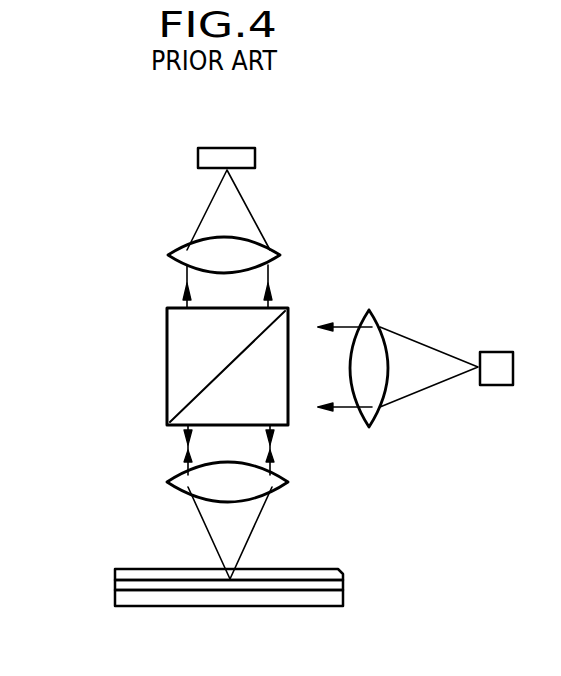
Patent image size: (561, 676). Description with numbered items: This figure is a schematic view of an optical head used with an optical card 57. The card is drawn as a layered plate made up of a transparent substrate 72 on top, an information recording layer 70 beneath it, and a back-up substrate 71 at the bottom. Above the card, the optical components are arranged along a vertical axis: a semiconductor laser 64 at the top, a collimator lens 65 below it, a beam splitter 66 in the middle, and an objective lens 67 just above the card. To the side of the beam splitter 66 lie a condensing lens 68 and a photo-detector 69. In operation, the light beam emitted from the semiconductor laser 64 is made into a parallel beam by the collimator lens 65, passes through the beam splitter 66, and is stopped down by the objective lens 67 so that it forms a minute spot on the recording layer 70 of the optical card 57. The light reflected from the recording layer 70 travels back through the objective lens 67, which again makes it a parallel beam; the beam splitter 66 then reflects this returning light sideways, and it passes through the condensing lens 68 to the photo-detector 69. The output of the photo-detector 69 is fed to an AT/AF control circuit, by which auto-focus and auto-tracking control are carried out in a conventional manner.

The optical card 57 is at (147, 563).
The semiconductor laser 64 is at (256, 158).
The collimator lens 65 is at (281, 255).
The beam splitter 66 is at (289, 309).
The objective lens 67 is at (289, 481).
The condensing lens 68 is at (378, 320).
The photo-detector 69 is at (493, 352).
The recording layer 70 is at (115, 583).
The back-up substrate 71 is at (125, 598).
The transparent substrate 72 is at (118, 566).